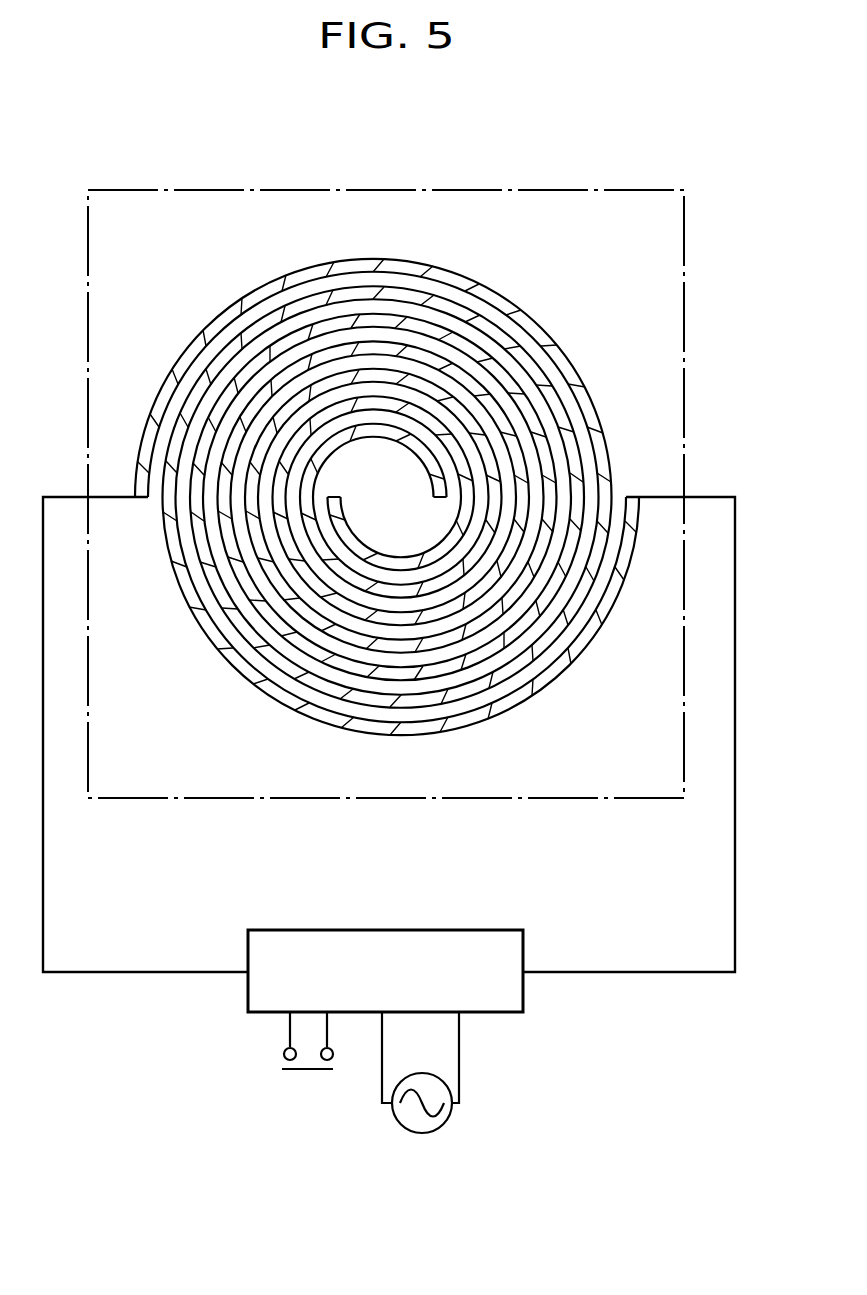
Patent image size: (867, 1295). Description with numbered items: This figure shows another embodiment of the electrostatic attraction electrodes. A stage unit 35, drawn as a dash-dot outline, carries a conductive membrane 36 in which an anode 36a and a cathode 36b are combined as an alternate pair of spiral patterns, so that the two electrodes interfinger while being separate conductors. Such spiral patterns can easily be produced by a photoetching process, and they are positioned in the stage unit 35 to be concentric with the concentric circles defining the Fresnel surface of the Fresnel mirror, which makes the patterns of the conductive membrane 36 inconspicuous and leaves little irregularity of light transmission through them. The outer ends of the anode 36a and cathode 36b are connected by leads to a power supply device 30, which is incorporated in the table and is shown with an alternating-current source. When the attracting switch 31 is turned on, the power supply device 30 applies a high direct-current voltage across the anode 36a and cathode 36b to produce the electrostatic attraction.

The power supply device 30 is at (507, 1013).
The attracting switch 31 is at (295, 1072).
The stage unit 35 is at (449, 190).
The conductive membrane 36 is at (395, 474).
The anode 36a is at (560, 348).
The cathode 36b is at (498, 300).